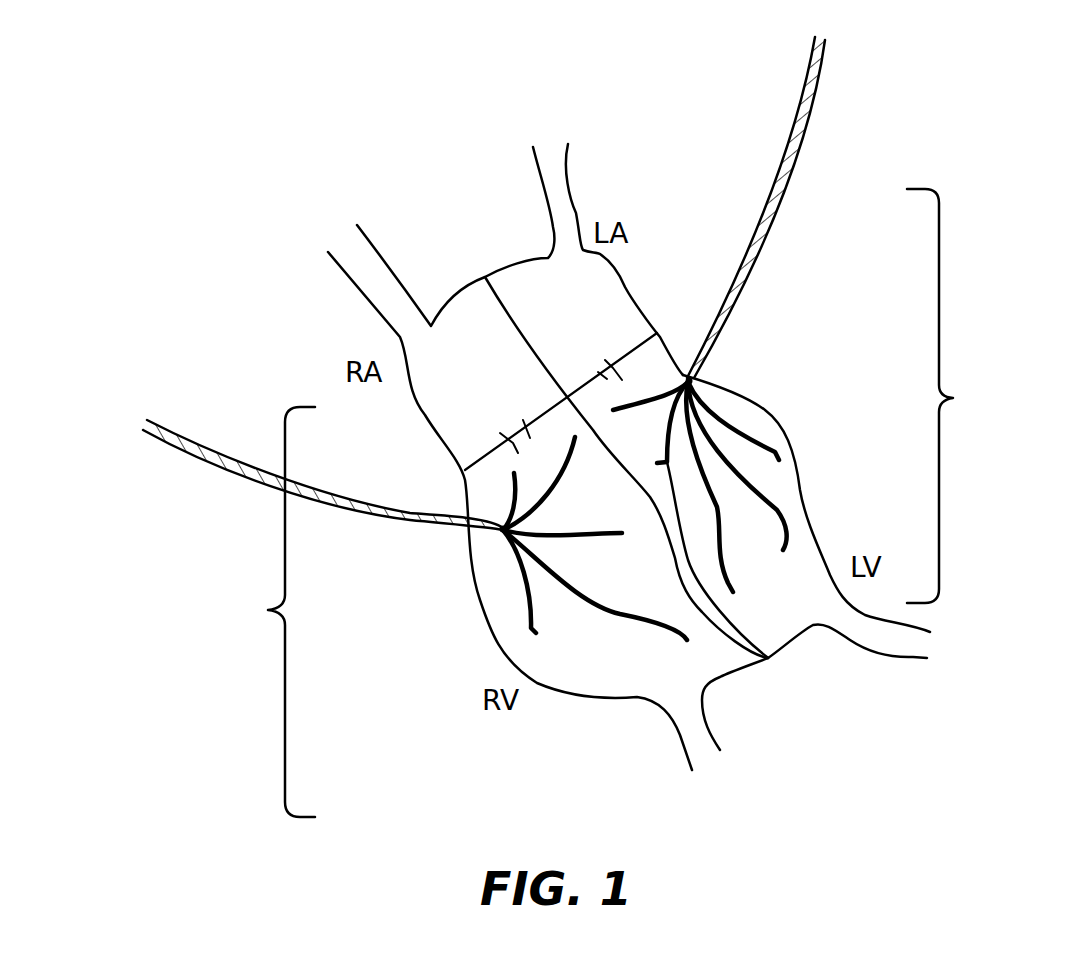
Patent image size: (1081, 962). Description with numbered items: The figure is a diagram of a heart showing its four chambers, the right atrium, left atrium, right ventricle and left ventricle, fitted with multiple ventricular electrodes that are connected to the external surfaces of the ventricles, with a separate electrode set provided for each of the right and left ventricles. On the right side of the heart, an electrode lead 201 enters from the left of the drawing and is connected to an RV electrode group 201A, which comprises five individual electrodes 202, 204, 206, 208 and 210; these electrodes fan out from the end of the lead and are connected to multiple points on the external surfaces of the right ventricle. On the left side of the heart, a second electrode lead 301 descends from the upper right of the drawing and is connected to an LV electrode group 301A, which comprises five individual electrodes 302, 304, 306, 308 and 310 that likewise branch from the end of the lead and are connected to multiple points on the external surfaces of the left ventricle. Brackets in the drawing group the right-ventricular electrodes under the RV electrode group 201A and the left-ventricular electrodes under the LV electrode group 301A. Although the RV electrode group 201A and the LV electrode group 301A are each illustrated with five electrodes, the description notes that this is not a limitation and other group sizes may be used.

The electrode lead 201 is at (166, 429).
The RV electrode group 201A is at (244, 612).
The electrode 202 is at (530, 624).
The electrode 204 is at (592, 607).
The electrode 206 is at (610, 533).
The electrode 208 is at (560, 459).
The electrode 210 is at (513, 503).
The electrode lead 301 is at (821, 100).
The LV electrode group 301A is at (979, 396).
The electrode 302 is at (717, 417).
The electrode 304 is at (765, 495).
The electrode 306 is at (733, 590).
The electrode 308 is at (768, 658).
The electrode 310 is at (660, 387).